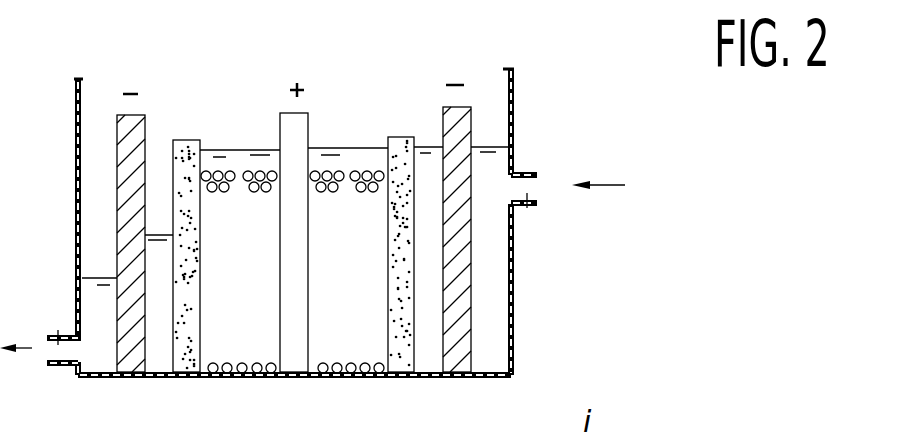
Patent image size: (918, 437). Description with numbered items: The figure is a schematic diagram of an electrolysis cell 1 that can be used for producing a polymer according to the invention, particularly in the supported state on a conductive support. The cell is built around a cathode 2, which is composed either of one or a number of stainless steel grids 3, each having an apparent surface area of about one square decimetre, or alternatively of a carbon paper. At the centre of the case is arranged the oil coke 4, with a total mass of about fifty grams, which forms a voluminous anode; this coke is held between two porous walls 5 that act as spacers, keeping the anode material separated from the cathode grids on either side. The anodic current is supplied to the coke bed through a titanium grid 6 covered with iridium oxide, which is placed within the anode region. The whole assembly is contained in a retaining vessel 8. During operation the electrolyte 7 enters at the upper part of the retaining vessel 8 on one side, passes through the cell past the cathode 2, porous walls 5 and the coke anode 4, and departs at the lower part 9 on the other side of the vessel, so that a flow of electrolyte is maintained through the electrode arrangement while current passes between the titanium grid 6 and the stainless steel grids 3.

The electrolysis cell 1 is at (580, 93).
The cathode 2 is at (164, 93).
The stainless steel grid 3 is at (123, 115).
The oil coke 4 is at (232, 173).
The porous wall 5 is at (175, 341).
The titanium grid 6 is at (306, 112).
The electrolyte 7 is at (527, 208).
The retaining vessel 8 is at (513, 85).
The lower part 9 is at (58, 330).